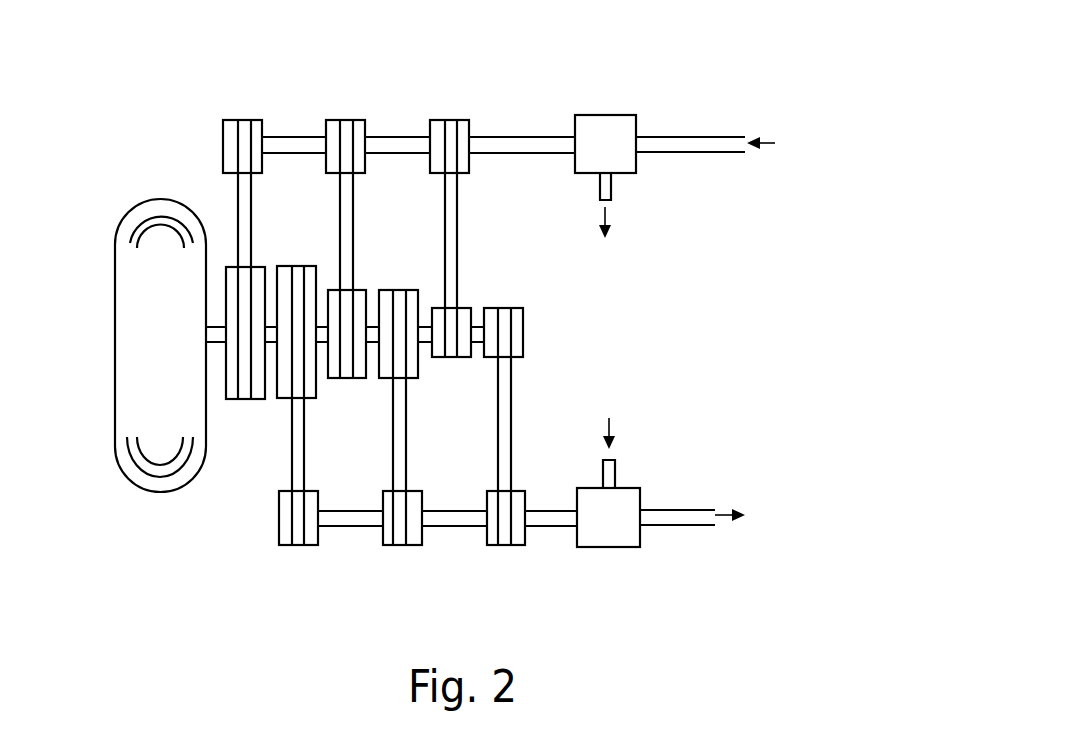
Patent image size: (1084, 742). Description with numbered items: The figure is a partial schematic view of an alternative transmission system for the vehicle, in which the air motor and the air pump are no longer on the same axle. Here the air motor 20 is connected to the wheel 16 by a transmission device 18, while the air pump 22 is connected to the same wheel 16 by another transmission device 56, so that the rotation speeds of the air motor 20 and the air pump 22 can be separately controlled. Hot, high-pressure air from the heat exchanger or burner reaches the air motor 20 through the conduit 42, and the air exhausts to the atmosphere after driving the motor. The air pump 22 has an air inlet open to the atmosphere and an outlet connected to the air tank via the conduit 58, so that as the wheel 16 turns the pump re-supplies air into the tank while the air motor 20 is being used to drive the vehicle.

The aft wheel 16 is at (115, 309).
The transmission device 18 is at (278, 128).
The air motor 20 is at (603, 115).
The air pump 22 is at (613, 537).
The conduit 42 is at (694, 152).
The transmission device 56 is at (342, 538).
The conduit 58 is at (681, 508).